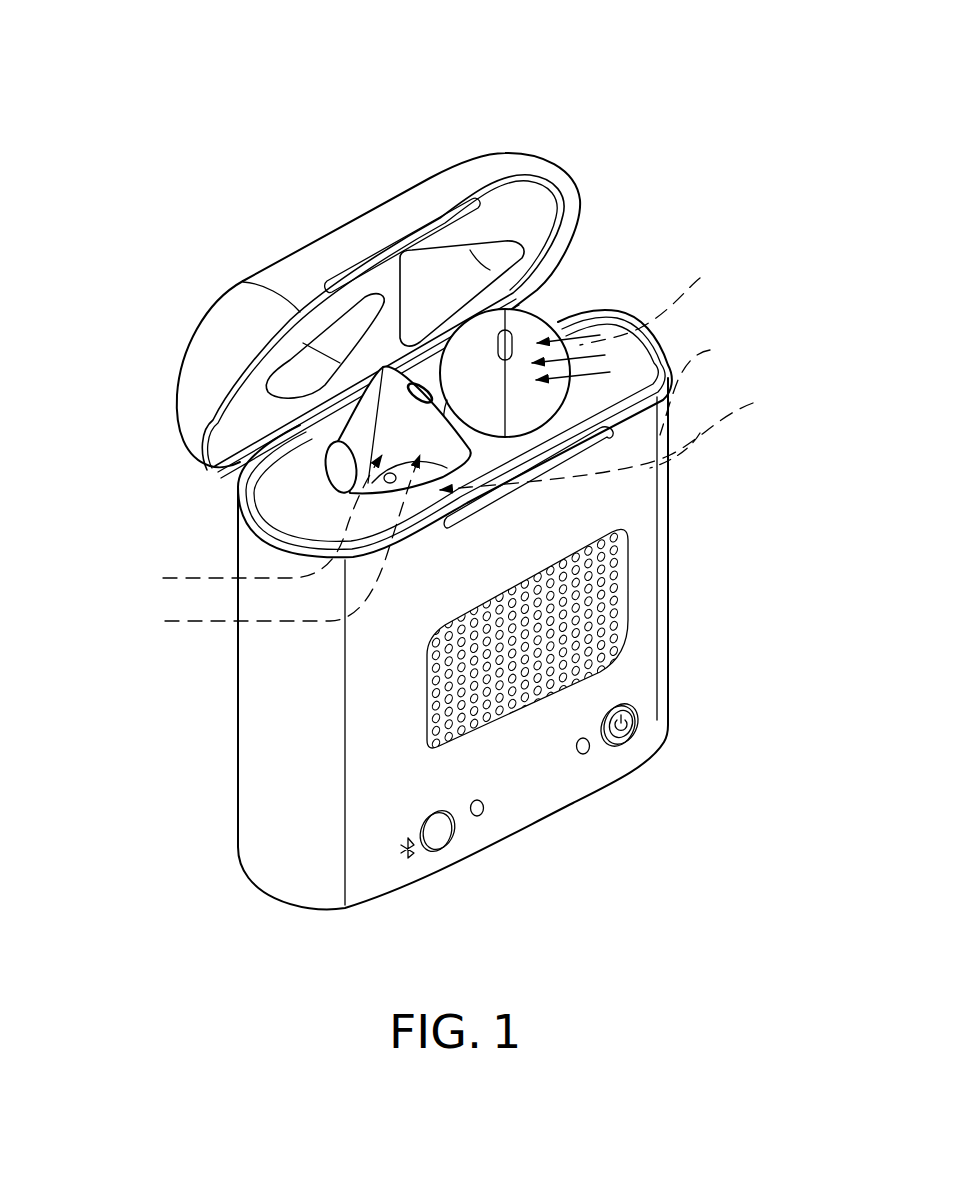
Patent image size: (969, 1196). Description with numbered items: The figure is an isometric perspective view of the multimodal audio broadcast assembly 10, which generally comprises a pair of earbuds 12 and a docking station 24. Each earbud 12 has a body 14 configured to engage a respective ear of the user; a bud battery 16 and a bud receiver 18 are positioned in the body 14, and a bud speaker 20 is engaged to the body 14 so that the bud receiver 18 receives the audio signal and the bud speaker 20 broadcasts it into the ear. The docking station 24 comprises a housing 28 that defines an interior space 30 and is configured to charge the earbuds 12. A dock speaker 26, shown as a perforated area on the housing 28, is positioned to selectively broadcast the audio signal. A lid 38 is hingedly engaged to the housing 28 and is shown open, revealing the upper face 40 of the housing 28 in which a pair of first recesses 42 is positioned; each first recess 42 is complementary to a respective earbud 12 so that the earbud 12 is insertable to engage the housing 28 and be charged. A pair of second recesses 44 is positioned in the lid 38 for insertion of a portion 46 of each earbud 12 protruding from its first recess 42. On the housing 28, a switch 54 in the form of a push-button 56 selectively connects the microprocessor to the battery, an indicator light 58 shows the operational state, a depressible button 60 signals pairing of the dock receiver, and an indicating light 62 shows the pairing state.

The multimodal audio broadcast assembly 10 is at (140, 72).
The earbud 12 is at (433, 400).
The body 14 is at (533, 307).
The bud battery 16 is at (717, 278).
The bud receiver 18 is at (730, 350).
The bud speaker 20 is at (330, 480).
The docking station 24 is at (670, 504).
The dock speaker 26 is at (593, 610).
The housing 28 is at (236, 665).
The interior space 30 is at (283, 713).
The lid 38 is at (507, 155).
The upper face 40 is at (643, 381).
The first recess 42 is at (753, 403).
The second recess 44 is at (350, 318).
The portion 46 is at (542, 304).
The switch 54 is at (625, 745).
The push-button 56 is at (642, 712).
The indicator light 58 is at (585, 762).
The button 60 is at (440, 853).
The indicating light 62 is at (483, 813).